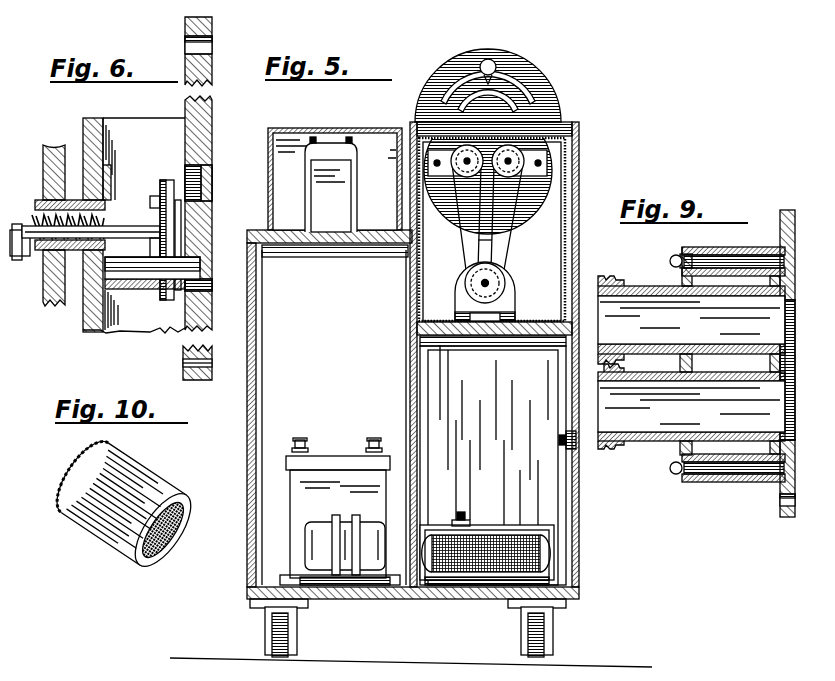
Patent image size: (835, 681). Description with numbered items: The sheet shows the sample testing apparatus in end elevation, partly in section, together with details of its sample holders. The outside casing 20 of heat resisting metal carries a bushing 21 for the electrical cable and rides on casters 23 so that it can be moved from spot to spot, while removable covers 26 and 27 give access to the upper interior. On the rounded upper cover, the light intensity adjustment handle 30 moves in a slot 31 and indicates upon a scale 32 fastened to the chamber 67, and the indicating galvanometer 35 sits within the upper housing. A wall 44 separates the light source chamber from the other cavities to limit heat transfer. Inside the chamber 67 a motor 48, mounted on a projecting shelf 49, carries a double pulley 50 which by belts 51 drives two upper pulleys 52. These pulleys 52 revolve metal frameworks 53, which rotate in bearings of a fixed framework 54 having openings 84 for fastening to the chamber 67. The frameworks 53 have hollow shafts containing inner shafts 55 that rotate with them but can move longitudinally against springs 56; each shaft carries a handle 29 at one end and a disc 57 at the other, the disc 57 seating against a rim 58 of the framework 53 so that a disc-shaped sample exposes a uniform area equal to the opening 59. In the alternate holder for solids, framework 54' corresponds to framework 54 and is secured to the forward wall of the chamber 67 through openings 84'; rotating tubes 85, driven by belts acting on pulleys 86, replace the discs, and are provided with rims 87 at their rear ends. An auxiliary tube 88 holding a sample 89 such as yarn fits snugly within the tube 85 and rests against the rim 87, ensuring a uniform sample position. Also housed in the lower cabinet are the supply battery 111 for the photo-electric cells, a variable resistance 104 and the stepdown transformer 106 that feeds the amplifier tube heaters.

In FIG. 5, the outside casing 20 is at (250, 450).
In FIG. 5, the bushing 21 is at (582, 450).
In FIG. 5, the casters 23 is at (290, 640).
In FIG. 5, the removable cover 26 is at (300, 128).
In FIG. 5, the removable cover 27 is at (441, 74).
In FIG. 6, the handle 29 is at (26, 243).
In FIG. 5, the adjustment handle for light intensity 30 is at (491, 58).
In FIG. 5, the slot 31 is at (520, 82).
In FIG. 5, the scale 32 is at (522, 104).
In FIG. 5, the indicating galvanometer 35 is at (334, 148).
In FIG. 5, the wall 44 is at (410, 388).
In FIG. 5, the motor 48 is at (462, 294).
In FIG. 5, the projecting shelf 49 is at (490, 337).
In FIG. 5, the double pulley 50 is at (498, 286).
In FIG. 5, the belts 51 is at (500, 245).
In FIG. 6, the upper pulleys 52 is at (55, 145).
In FIG. 5, the upper pulleys 52 is at (456, 188).
In FIG. 6, the metal frameworks 53 is at (112, 170).
In FIG. 6, the fixed framework 54 is at (149, 228).
In FIG. 5, the fixed framework 54 is at (514, 162).
In FIG. 9, the framework 54' is at (782, 233).
In FIG. 6, the inner shafts 55 is at (126, 236).
In FIG. 5, the inner shafts 55 is at (466, 160).
In FIG. 6, the springs 56 is at (28, 228).
In FIG. 6, the discs 57 is at (152, 288).
In FIG. 6, the rims 58 is at (208, 174).
In FIG. 6, the openings 59 is at (206, 243).
In FIG. 5, the chamber 67 is at (520, 210).
In FIG. 6, the openings 84 is at (216, 201).
In FIG. 9, the openings 84' is at (768, 368).
In FIG. 9, the rotating tubes 85 is at (646, 288).
In FIG. 9, the pulleys 86 is at (610, 280).
In FIG. 9, the rims 87 is at (786, 338).
In FIG. 10, the auxiliary tube 88 is at (96, 548).
In FIG. 10, the sample of material 89 is at (76, 470).
In FIG. 5, the variable resistance 104 is at (482, 545).
In FIG. 5, the stepdown transformer 106 is at (366, 540).
In FIG. 5, the supply battery 111 is at (337, 485).